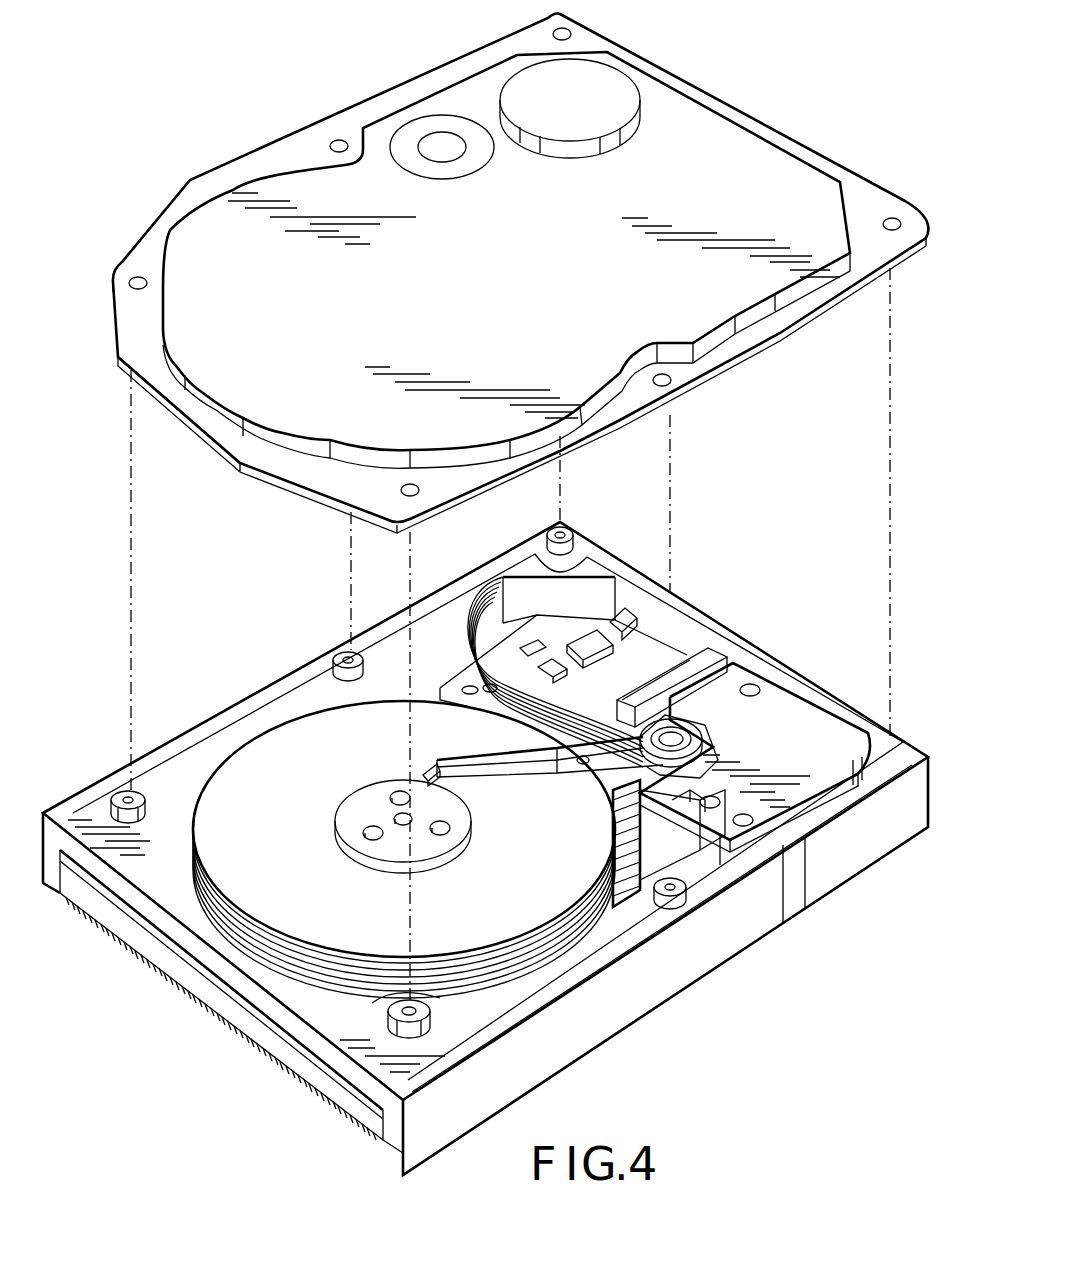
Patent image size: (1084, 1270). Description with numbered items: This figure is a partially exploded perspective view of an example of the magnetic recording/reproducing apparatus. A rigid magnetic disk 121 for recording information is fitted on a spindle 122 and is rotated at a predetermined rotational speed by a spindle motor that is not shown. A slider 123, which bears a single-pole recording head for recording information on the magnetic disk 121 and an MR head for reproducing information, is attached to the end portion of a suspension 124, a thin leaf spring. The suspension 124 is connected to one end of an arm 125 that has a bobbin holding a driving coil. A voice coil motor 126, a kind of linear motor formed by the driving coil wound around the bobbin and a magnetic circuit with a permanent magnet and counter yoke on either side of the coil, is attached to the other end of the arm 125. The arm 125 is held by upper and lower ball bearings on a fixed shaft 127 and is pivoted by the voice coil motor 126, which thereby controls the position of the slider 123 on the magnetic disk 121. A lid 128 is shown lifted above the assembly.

The magnetic disk 121 is at (238, 787).
The spindle 122 is at (350, 822).
The slider 123 is at (428, 772).
The suspension 124 is at (510, 768).
The arm 125 is at (585, 772).
The voice coil motor 126 is at (790, 717).
The fixed shaft 127 is at (692, 738).
The lid 128 is at (770, 170).